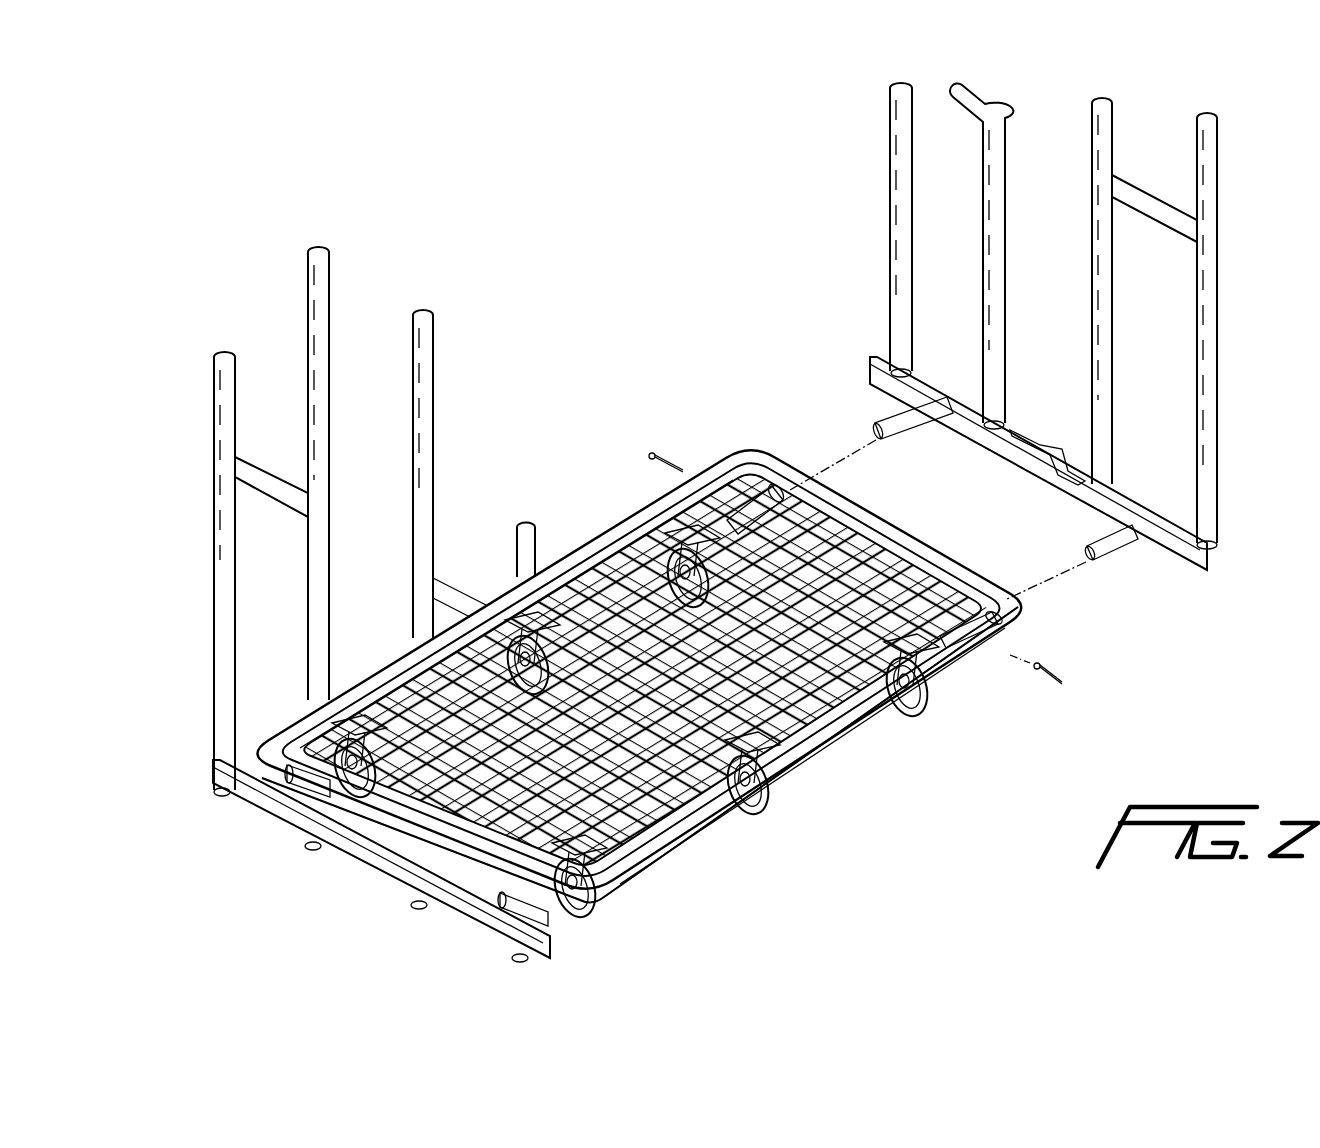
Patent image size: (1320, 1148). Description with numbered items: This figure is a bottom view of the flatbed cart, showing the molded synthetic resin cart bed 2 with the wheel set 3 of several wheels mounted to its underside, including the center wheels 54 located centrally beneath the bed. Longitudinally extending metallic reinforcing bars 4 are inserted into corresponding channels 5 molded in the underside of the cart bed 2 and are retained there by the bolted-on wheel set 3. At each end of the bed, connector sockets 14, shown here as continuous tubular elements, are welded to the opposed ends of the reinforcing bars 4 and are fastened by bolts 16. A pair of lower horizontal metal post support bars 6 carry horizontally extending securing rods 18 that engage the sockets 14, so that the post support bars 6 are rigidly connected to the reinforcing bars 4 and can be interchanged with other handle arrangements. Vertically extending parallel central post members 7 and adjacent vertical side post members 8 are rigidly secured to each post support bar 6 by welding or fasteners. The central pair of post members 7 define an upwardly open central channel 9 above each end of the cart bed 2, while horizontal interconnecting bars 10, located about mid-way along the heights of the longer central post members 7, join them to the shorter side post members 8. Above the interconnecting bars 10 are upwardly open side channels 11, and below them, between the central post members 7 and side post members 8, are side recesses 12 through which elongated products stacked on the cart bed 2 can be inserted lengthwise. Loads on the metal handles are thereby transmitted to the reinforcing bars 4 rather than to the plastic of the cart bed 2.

The cart bed 2 is at (592, 535).
The wheel set 3 is at (593, 913).
The reinforcing bars 4 is at (652, 570).
The channels 5 is at (430, 700).
The post support bars 6 is at (260, 797).
The central post members 7 is at (413, 407).
The side post members 8 is at (214, 545).
The open central channel 9 is at (352, 328).
The horizontal interconnecting bars 10 is at (278, 503).
The side channels 11 is at (250, 428).
The side recesses 12 is at (932, 293).
The connector sockets 14 is at (765, 470).
The bolts 16 is at (656, 452).
The securing rods 18 is at (893, 440).
The center wheels 54 is at (757, 820).